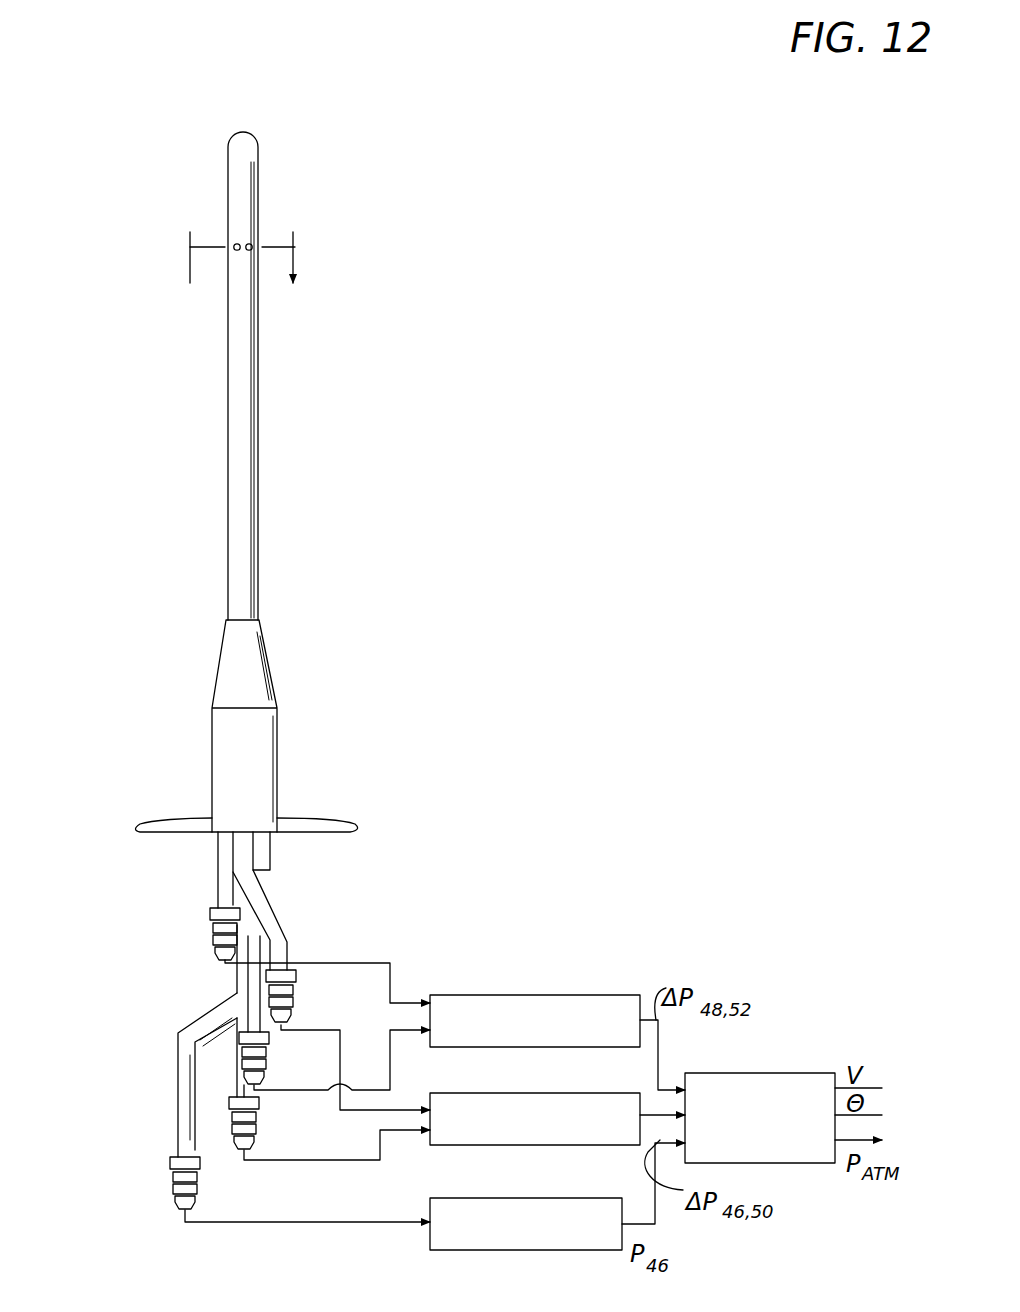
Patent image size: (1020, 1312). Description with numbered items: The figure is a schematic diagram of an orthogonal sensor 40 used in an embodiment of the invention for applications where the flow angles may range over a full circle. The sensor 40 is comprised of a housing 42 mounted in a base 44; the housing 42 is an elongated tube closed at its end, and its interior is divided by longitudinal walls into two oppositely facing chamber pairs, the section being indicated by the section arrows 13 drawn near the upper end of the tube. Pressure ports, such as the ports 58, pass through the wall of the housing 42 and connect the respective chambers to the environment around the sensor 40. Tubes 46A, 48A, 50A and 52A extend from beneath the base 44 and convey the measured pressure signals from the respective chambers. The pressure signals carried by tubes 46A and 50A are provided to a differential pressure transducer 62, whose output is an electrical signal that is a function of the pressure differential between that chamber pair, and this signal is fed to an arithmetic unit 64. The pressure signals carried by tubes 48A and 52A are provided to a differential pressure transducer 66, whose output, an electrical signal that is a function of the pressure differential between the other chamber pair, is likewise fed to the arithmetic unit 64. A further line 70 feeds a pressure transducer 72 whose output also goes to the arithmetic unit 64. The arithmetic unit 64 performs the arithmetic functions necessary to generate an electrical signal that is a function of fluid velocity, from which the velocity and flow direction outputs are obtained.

The section line 13- 13 is at (239, 282).
The sensor 40 is at (208, 376).
The housing 42 is at (238, 428).
The base 44 is at (232, 740).
The ports 58 is at (239, 243).
The tube 48A is at (222, 870).
The tube 50A is at (263, 898).
The tube 52A is at (268, 1058).
The tube 46A is at (260, 1126).
The pressure line 70 is at (170, 1186).
The differential pressure transducer 66 is at (480, 995).
The differential pressure transducer 62 is at (505, 1093).
The P transducer 72 is at (512, 1198).
The arithmetic unit 64 is at (720, 1073).